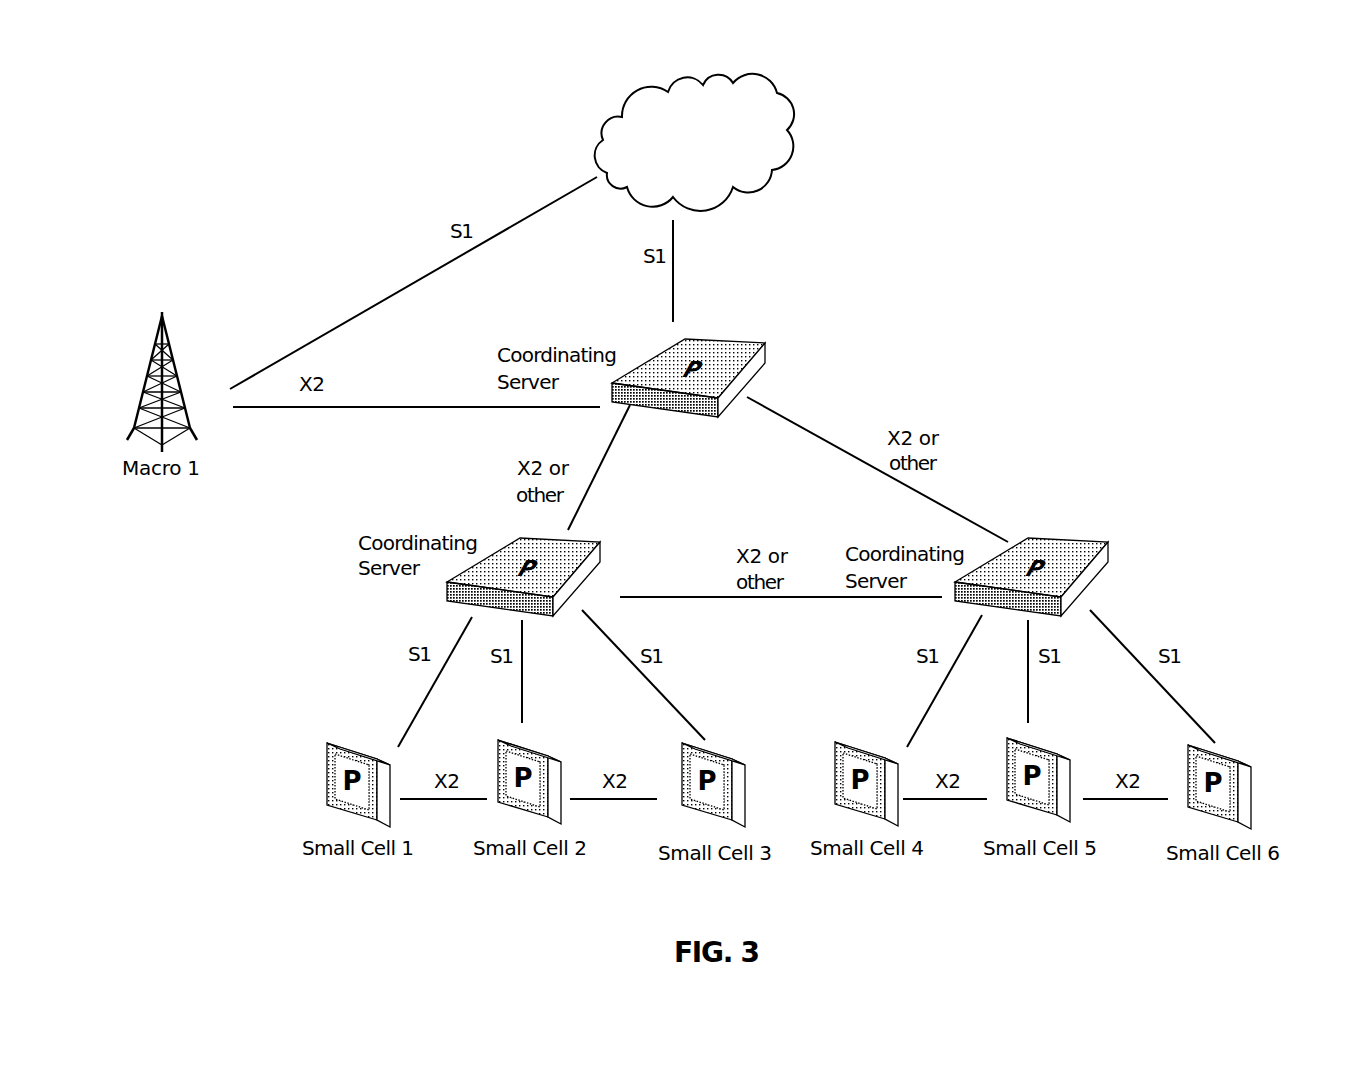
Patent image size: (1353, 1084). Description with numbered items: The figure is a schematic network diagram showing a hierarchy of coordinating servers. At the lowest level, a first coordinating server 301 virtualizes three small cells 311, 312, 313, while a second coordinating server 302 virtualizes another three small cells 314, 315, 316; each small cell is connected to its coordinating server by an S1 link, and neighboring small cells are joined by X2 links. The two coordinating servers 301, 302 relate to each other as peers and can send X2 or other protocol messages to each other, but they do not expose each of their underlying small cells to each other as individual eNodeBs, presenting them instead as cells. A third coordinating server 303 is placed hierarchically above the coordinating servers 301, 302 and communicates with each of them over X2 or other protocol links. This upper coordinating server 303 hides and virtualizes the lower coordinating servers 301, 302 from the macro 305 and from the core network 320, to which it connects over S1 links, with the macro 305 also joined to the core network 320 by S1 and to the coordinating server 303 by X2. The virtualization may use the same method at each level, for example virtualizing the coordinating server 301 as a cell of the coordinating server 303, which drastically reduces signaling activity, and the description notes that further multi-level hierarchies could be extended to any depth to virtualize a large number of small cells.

The core network 320 is at (782, 93).
The macro 305 is at (173, 352).
The coordinating server 303 is at (693, 338).
The coordinating server 301 is at (608, 553).
The coordinating server 302 is at (1040, 535).
The small cell 311 is at (357, 742).
The small cell 312 is at (528, 743).
The small cell 313 is at (710, 747).
The small cell 314 is at (865, 742).
The small cell 315 is at (1035, 742).
The small cell 316 is at (1217, 747).